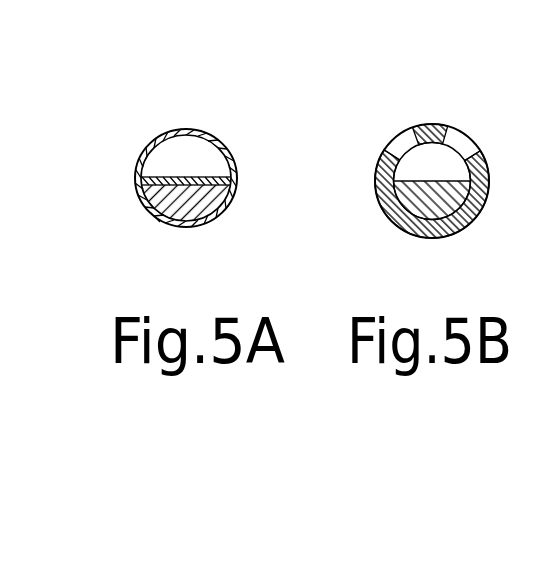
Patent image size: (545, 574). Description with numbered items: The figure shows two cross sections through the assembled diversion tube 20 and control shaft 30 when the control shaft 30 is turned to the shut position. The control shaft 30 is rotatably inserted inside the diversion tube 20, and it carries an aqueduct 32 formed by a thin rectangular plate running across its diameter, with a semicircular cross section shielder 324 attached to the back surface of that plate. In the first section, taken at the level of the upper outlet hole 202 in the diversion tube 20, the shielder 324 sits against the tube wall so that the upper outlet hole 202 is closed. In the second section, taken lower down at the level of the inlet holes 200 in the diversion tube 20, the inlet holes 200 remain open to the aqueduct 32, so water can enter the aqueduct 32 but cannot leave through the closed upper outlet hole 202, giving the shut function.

In FIG. 5A, the diversion tube 20 is at (168, 132).
In FIG. 5B, the diversion tube 20 is at (412, 222).
In FIG. 5A, the aqueduct 32 is at (195, 168).
In FIG. 5B, the aqueduct 32 is at (412, 162).
In FIG. 5A, the control shaft 30 is at (221, 185).
In FIG. 5B, the control shaft 30 is at (448, 195).
In FIG. 5A, the shielder 324 is at (213, 207).
In FIG. 5A, the upper outlet hole 202 is at (150, 212).
In FIG. 5B, the inlet holes 200 is at (460, 140).